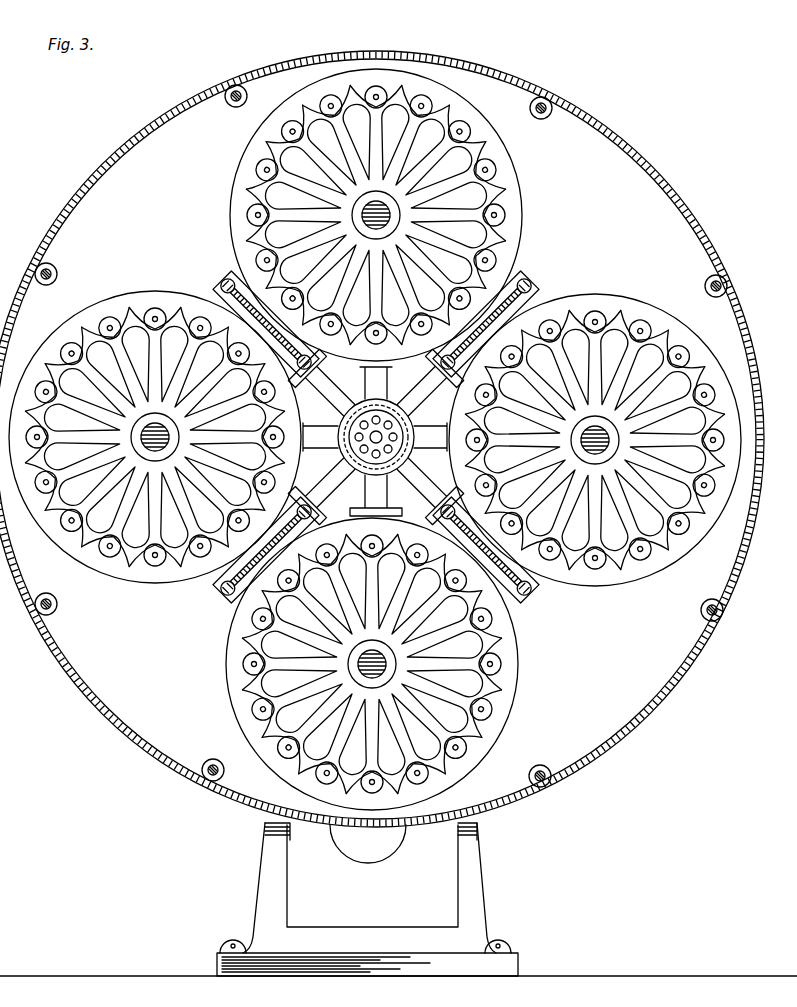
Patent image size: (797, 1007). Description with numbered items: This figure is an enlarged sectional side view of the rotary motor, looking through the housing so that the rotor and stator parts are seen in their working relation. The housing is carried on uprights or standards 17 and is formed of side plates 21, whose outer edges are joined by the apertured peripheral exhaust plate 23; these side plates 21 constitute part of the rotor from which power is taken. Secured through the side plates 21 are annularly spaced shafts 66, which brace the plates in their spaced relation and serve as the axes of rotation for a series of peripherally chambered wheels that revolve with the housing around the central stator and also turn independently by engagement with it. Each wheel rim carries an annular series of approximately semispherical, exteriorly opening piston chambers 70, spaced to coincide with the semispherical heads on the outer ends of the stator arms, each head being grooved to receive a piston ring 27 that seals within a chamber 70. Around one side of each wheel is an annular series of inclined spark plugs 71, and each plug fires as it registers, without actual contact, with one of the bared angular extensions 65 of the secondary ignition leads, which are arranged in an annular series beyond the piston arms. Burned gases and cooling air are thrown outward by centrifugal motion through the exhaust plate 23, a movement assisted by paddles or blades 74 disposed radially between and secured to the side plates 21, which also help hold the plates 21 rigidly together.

The standards 17 is at (470, 886).
The side plates 21 is at (147, 207).
The peripheral exhaust plate 23 is at (132, 138).
The piston ring 27 is at (375, 436).
The angular extensions 65 is at (333, 143).
The shafts 66 is at (378, 208).
The piston chambers 70 is at (236, 216).
The spark plugs 71 is at (276, 172).
The paddles or blades 74 is at (228, 290).